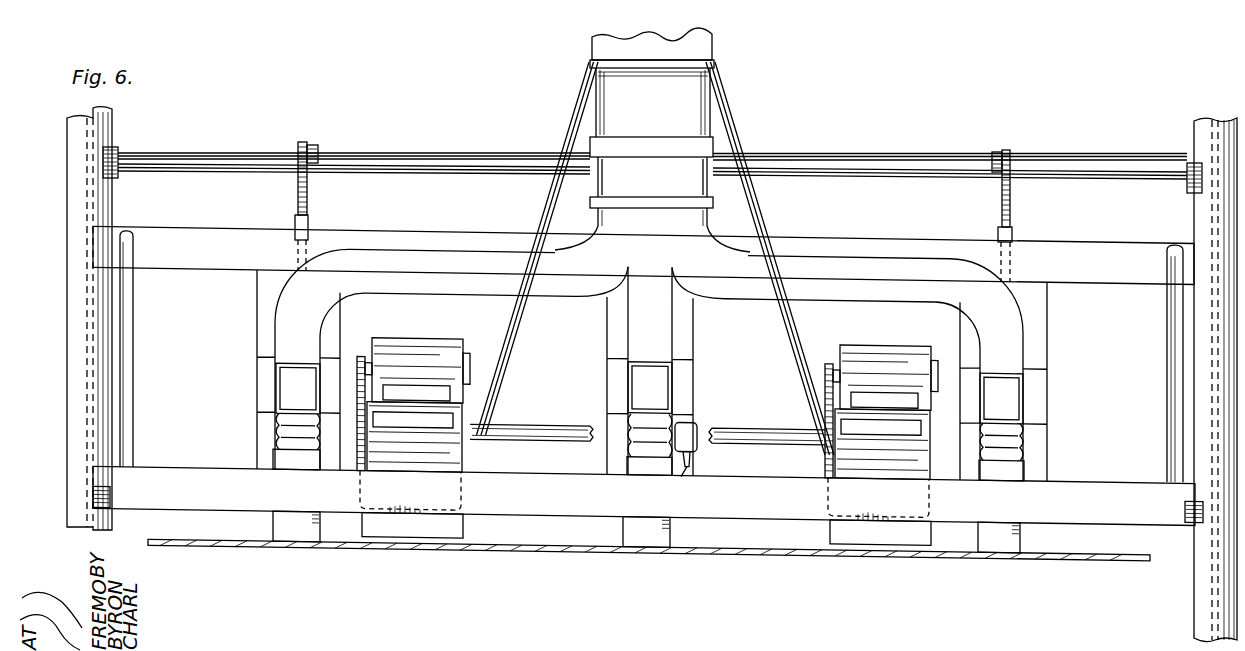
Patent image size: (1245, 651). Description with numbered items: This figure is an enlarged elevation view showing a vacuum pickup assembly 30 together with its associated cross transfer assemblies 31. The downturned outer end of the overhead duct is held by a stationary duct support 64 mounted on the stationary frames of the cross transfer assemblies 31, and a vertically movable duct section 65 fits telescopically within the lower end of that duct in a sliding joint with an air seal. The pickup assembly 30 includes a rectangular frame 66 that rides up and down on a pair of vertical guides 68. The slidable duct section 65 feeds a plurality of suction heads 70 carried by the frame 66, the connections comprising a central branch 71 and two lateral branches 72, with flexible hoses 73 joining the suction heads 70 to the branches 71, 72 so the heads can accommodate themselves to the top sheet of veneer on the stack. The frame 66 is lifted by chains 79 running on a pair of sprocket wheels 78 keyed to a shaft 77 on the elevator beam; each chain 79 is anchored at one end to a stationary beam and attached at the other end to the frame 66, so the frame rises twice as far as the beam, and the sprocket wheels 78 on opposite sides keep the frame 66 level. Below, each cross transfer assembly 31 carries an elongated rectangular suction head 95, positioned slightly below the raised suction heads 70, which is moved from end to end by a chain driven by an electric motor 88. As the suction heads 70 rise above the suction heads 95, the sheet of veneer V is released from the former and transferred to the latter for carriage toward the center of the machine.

The vacuum pickup assembly 30 is at (877, 138).
The cross transfer assembly 31 is at (462, 456).
The stationary duct support 64 is at (730, 106).
The vertically movable duct section 65 is at (606, 101).
The rectangular frame 66 is at (209, 225).
The vertical guides 68 is at (112, 117).
The suction heads 70 is at (273, 522).
The central branch 71 is at (668, 312).
The lateral branches 72 is at (398, 244).
The flexible hoses 73 is at (285, 430).
The shaft 77 is at (405, 138).
The sprocket wheels 78 is at (302, 150).
The chains 79 is at (307, 192).
The electric motor 88 is at (408, 332).
The elongated rectangular suction head 95 is at (466, 524).
The sheet of veneer V is at (591, 543).